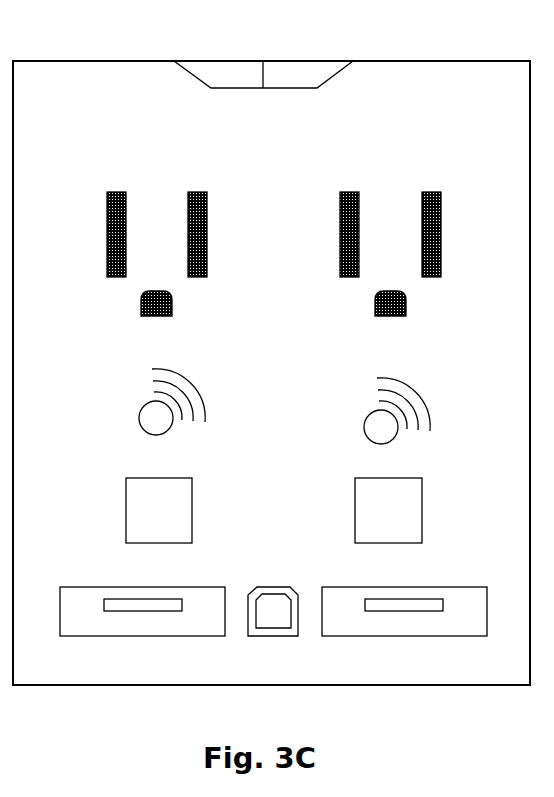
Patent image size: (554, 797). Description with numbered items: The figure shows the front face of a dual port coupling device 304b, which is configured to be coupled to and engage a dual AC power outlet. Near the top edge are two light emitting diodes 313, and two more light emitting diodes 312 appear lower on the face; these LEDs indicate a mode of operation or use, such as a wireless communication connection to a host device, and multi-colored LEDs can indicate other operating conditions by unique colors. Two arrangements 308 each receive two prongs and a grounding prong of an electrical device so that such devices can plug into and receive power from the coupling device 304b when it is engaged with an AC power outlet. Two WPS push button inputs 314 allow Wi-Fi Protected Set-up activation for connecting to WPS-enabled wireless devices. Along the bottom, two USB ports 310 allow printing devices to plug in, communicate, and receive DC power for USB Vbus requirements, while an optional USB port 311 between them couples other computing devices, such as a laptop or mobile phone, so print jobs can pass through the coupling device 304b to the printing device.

The coupling device 304b is at (418, 50).
The light emitting diode 313 is at (216, 52).
The arrangement configured to receive prongs 308 is at (87, 220).
The light emitting diode 312 is at (115, 396).
The WPS push button 314 is at (103, 491).
The USB port 310 is at (95, 567).
The USB port 311 is at (240, 580).